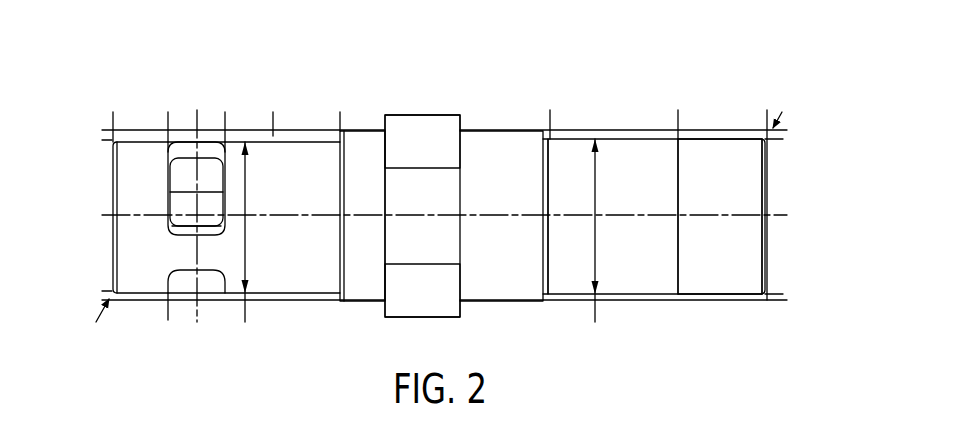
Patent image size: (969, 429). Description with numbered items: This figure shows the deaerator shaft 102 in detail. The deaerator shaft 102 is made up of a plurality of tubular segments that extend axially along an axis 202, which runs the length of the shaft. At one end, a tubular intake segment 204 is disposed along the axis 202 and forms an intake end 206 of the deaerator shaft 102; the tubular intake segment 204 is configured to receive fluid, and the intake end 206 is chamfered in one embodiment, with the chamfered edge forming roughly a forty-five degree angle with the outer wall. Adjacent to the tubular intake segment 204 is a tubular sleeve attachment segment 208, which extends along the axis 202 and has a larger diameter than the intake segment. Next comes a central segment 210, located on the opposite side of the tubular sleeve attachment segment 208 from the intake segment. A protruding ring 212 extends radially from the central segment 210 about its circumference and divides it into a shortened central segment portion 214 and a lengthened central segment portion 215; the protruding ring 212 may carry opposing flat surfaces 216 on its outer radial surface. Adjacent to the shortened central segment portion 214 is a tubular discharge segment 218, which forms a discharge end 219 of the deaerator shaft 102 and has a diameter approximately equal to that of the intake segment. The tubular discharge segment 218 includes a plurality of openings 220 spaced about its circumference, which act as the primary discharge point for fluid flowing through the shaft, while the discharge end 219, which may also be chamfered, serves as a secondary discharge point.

The deaerator shaft 102 is at (638, 96).
The axis 202 is at (777, 209).
The tubular intake segment 204 is at (727, 138).
The intake end 206 is at (768, 155).
The tubular sleeve attachment segment 208 is at (603, 138).
The central segment 210 is at (399, 88).
The protruding ring 212 is at (446, 115).
The shortened central segment portion 214 is at (360, 130).
The lengthened central segment portion 215 is at (502, 130).
The opposing flat surfaces 216 is at (442, 265).
The tubular discharge segment 218 is at (262, 142).
The discharge end 219 is at (112, 165).
The plurality of openings 220 is at (212, 177).